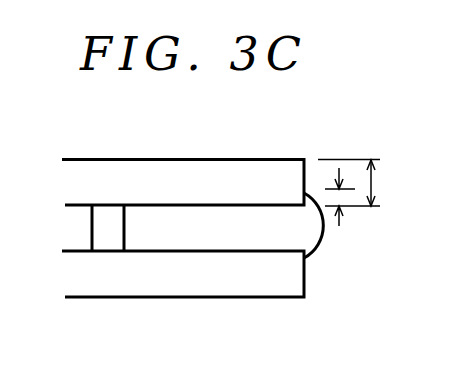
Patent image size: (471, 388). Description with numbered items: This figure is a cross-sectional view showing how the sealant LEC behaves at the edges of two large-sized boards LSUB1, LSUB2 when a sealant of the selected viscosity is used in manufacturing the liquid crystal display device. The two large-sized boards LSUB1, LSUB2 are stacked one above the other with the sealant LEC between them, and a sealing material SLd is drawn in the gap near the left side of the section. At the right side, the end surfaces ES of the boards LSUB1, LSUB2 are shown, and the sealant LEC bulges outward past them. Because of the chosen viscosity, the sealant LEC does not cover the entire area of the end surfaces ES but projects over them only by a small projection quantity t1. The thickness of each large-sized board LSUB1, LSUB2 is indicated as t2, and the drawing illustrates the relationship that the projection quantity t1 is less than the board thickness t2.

The seal SLd is at (108, 220).
The large-sized board LSUB2 is at (183, 178).
The sealant LEC is at (235, 223).
The large-sized board LSUB1 is at (208, 283).
The end surface ES is at (304, 159).
The projection quantity t1 is at (343, 232).
The thickness t2 is at (363, 183).